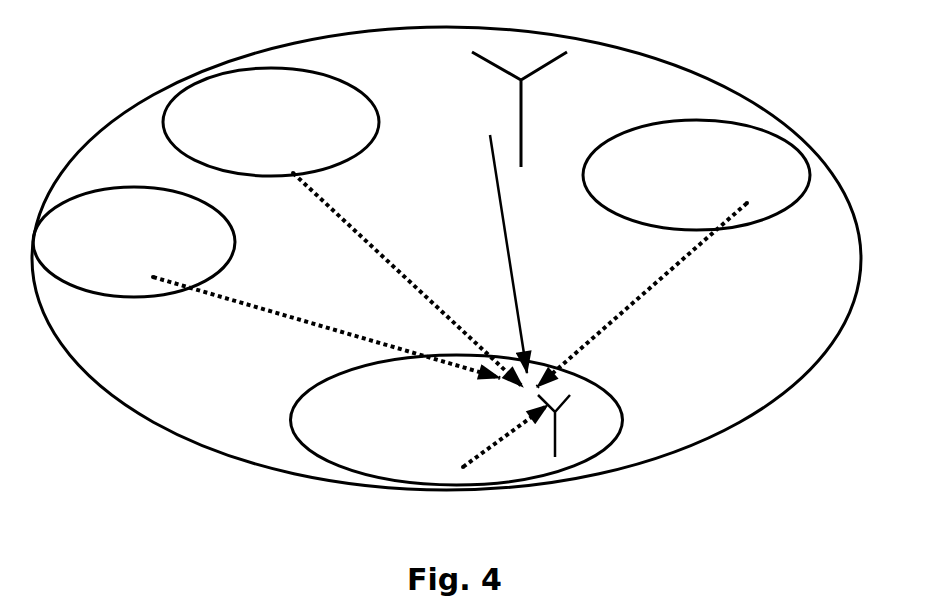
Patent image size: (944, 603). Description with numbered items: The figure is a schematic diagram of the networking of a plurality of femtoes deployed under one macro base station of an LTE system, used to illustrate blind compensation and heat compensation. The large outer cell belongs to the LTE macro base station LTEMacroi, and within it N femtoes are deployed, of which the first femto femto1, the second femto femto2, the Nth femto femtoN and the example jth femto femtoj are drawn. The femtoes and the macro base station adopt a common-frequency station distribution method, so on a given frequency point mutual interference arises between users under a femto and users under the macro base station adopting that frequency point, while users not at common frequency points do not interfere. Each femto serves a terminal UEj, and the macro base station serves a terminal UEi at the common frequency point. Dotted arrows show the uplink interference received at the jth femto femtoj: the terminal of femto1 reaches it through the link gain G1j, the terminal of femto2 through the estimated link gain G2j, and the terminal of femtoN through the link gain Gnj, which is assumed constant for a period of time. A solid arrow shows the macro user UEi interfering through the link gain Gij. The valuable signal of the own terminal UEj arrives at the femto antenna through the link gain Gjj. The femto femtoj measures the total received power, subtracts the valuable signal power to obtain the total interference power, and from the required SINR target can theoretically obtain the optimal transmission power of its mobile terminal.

The femto femto1 is at (271, 122).
The femto femto2 is at (134, 242).
The femto femtoN is at (696, 175).
The femto j femtoj is at (457, 420).
The macro base station i LTEMacroi is at (534, 109).
The UE under the macro base station UEi is at (493, 241).
The UE under the femto UEj is at (438, 312).
The link gain G1j is at (408, 280).
The link gain G2j is at (326, 327).
The link gain Gij is at (493, 274).
The link gain Gnj is at (642, 295).
The link gain Gjj is at (505, 439).